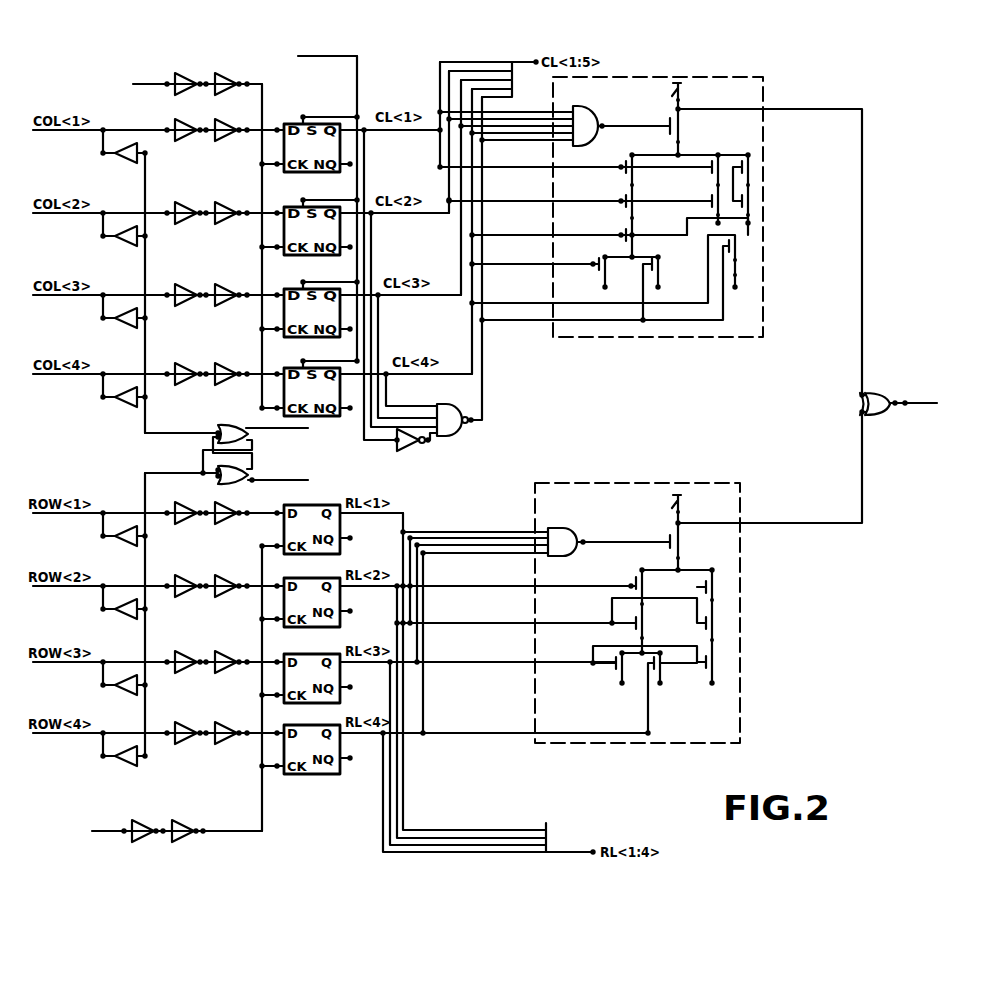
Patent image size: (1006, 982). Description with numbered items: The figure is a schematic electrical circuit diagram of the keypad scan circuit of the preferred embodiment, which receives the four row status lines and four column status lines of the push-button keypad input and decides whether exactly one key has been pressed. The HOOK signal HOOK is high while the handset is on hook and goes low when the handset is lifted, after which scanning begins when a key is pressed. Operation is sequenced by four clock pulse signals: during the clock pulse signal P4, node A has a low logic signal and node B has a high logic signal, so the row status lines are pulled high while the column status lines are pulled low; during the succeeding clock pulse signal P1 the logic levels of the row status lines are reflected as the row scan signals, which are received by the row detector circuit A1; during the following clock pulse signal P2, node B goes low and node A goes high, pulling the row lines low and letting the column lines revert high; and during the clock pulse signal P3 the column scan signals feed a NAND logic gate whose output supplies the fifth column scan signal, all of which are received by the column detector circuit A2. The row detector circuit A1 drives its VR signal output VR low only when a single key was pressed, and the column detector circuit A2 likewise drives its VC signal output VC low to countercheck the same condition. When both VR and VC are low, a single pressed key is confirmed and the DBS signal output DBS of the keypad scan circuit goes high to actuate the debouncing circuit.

The row detector circuit A1 is at (593, 489).
The column detector circuit A2 is at (637, 84).
The clock pulse signal P1 is at (165, 831).
The clock pulse signal P2 is at (289, 431).
The clock pulse signal P3 is at (184, 84).
The clock pulse signal P4 is at (290, 483).
The HOOK signal HOOK is at (295, 56).
The VC signal output VC is at (770, 243).
The VR signal output VR is at (770, 468).
The DBS signal output DBS is at (917, 403).
The node A is at (181, 465).
The node B is at (181, 427).